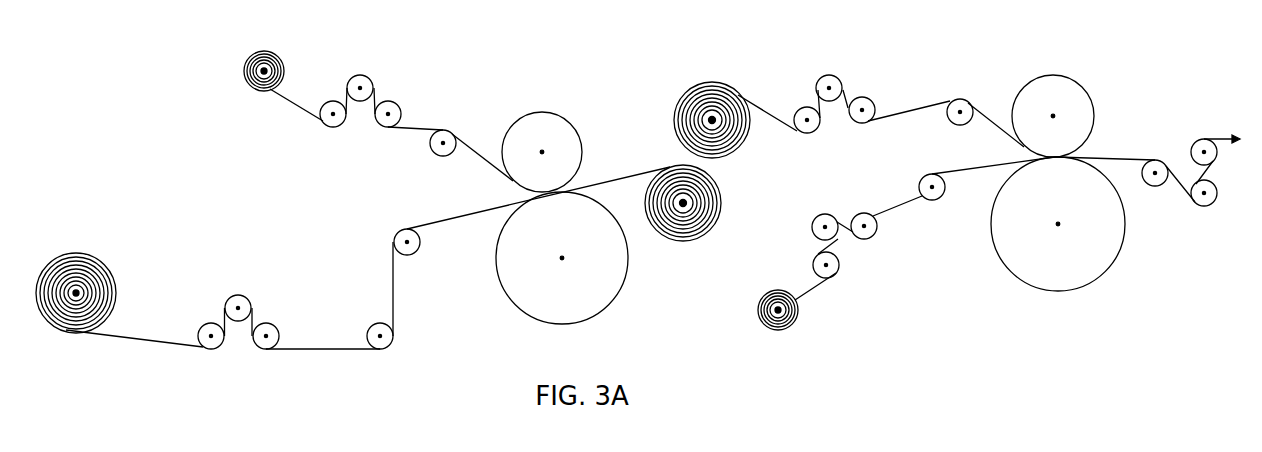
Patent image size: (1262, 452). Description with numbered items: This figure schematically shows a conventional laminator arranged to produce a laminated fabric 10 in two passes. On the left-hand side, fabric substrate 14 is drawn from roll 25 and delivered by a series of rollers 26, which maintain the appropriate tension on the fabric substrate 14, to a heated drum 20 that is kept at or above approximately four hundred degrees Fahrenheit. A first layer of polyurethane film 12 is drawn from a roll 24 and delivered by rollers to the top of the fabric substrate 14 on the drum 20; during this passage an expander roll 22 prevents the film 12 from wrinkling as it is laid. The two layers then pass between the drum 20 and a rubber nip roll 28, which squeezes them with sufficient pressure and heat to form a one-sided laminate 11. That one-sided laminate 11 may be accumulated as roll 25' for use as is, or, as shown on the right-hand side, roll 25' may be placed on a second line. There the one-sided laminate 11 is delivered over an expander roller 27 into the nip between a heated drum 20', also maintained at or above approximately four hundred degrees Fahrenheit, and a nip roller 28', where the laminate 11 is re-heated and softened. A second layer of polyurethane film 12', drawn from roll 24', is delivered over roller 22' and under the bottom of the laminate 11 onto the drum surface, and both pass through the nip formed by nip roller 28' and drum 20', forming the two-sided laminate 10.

The laminated fabric 10 is at (1133, 157).
The one-sided laminate 11 is at (619, 177).
The first layer of polyurethane film 12 is at (334, 111).
The second film 12' is at (858, 286).
The fabric substrate 14 is at (127, 340).
The heated drum 20 is at (562, 258).
The heated drum 20' is at (1058, 224).
The expander roll 22 is at (471, 124).
The roller 22' is at (954, 176).
The roll 24 is at (281, 52).
The supply roll of first web (second station) 24' is at (778, 342).
The roll 25 is at (76, 269).
The roll 25' is at (712, 94).
The series of rollers 26 is at (204, 363).
The expander roller 27 is at (962, 101).
The rubber nip roll 28 is at (542, 123).
The nip roller 28' is at (1053, 116).